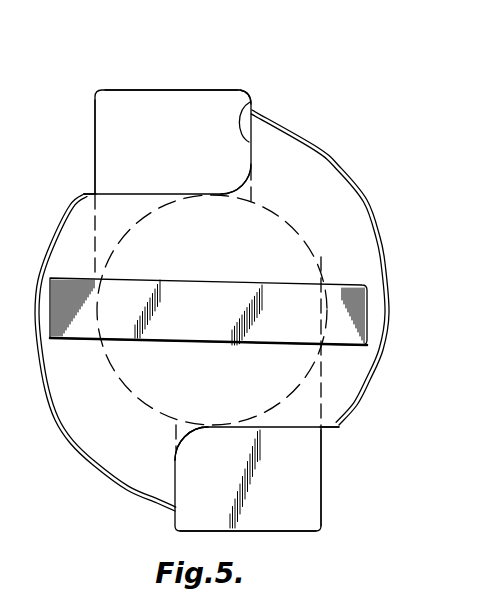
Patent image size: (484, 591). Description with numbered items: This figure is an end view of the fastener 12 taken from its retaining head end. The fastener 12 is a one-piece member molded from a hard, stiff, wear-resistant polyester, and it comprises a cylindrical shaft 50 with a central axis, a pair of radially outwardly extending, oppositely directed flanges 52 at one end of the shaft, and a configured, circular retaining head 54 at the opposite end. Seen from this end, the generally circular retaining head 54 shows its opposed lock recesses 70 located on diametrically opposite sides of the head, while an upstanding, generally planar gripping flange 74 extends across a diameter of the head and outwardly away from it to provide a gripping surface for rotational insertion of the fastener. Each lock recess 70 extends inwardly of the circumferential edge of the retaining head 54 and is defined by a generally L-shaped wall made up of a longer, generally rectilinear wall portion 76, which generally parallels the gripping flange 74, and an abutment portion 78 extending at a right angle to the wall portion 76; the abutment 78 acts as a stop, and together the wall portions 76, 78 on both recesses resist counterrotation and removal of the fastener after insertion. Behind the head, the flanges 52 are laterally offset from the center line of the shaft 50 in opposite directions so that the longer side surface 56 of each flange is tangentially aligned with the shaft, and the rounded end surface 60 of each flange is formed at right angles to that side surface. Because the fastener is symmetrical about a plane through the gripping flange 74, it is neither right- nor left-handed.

The fastener 12 is at (225, 306).
The cylindrical shaft 50 is at (313, 255).
The flanges 52 is at (105, 182).
The retaining head 54 is at (345, 200).
The side surface 56 is at (94, 173).
The end surface 60 is at (181, 90).
The lock recesses 70 is at (226, 167).
The gripping flange 74 is at (193, 322).
The rectilinear wall portion 76 is at (164, 193).
The abutment portion 78 is at (253, 101).